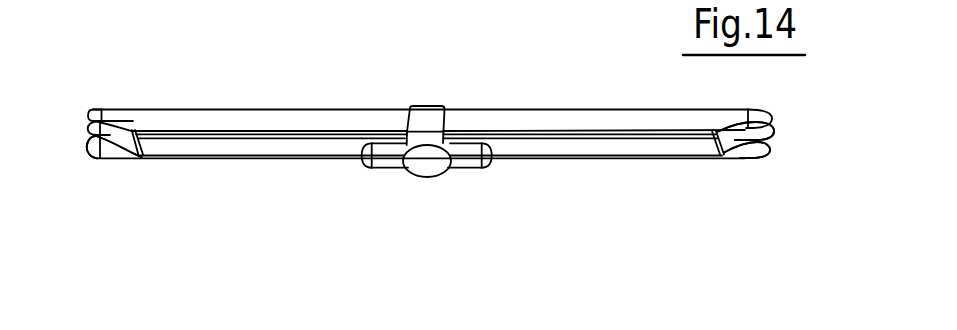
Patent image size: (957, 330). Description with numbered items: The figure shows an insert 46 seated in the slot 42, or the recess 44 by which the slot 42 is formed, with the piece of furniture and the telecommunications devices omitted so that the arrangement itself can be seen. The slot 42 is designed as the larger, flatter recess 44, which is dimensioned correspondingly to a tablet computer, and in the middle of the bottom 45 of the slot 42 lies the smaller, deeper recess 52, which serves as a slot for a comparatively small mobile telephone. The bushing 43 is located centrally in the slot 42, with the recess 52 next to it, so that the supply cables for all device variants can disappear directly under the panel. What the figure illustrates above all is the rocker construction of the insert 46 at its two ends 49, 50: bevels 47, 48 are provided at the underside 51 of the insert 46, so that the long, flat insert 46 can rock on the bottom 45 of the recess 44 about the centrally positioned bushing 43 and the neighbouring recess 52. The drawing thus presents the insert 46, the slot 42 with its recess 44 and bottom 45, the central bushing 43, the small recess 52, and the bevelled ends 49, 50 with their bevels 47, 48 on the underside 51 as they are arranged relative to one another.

The slot 42 is at (733, 158).
The bushing 43 is at (437, 173).
The recess 44 is at (733, 158).
The bottom 45 is at (562, 157).
The insert 46 is at (582, 118).
The bevel 47 is at (740, 150).
The bevel 48 is at (102, 157).
The end 49 is at (740, 150).
The end 50 is at (102, 157).
The underside 51 is at (650, 157).
The recess 52 is at (385, 167).